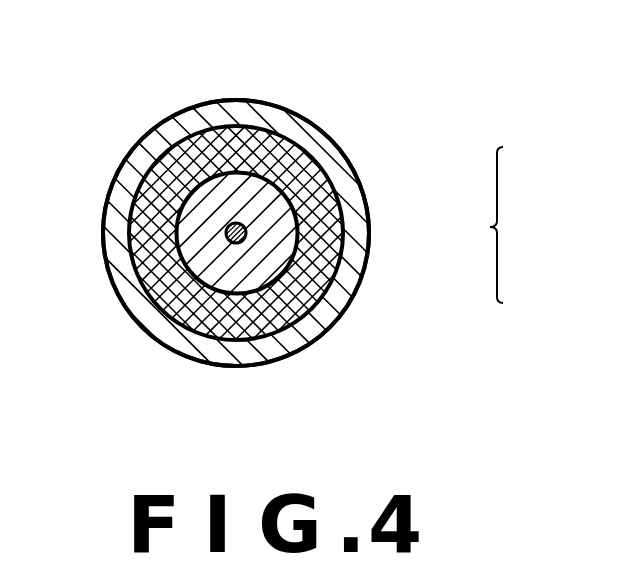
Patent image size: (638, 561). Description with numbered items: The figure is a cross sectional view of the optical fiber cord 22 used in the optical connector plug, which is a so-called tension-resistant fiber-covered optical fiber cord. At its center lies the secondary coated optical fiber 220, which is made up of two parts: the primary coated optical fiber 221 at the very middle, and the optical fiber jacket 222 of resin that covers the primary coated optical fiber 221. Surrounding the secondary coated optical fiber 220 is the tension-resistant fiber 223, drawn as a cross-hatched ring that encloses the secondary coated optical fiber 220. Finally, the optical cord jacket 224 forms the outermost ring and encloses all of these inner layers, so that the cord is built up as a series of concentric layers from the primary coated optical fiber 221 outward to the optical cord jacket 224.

The optical fiber cord 22 is at (147, 340).
The secondary coated optical fiber 220 is at (527, 225).
The primary coated optical fiber 221 is at (247, 237).
The optical fiber jacket 222 is at (277, 202).
The tension-resistant fiber 223 is at (232, 138).
The optical cord jacket 224 is at (162, 128).